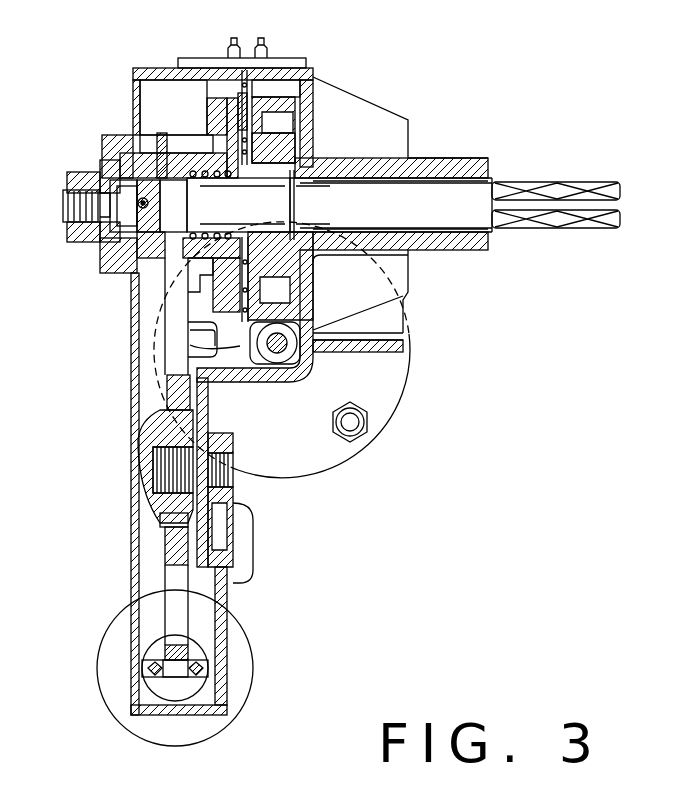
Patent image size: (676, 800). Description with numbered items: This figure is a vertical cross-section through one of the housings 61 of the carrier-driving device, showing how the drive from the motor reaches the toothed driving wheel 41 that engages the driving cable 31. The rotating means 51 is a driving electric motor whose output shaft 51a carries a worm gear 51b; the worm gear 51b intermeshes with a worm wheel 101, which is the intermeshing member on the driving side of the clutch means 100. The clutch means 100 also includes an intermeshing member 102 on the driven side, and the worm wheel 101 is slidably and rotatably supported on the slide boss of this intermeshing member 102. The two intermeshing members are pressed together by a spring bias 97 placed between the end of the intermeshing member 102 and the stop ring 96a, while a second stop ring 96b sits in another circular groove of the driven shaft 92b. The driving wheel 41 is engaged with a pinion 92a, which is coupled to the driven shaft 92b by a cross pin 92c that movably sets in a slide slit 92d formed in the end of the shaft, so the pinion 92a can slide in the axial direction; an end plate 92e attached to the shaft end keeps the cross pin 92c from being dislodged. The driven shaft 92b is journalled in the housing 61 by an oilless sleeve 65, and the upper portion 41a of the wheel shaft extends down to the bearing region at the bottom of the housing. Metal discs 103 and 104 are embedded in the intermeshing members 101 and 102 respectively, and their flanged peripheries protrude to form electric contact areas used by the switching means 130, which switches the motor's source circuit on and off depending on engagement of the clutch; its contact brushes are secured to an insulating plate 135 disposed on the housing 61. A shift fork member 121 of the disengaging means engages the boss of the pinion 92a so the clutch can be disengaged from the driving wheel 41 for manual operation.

The switching means 130 is at (230, 90).
The insulating plate 135 is at (289, 58).
The shift fork member 121 is at (133, 134).
The spring bias 97 is at (195, 132).
The pinion 92a is at (187, 142).
The clutch means 100 is at (305, 133).
The intermeshing member 102 is at (300, 162).
The driven shaft 92b is at (478, 195).
The end plate 92e is at (68, 230).
The cross pin 92c is at (234, 198).
The stop ring 96a is at (265, 228).
The stop ring 96b is at (294, 226).
The oilless sleeve 65 is at (338, 224).
The slide slit 92d is at (103, 247).
The worm wheel 101 is at (316, 327).
The shaft upper portion 41a is at (138, 292).
The metal disc 104 is at (217, 325).
The metal disc 103 is at (247, 345).
The worm gear 51b is at (285, 352).
The output shaft 51a is at (237, 383).
The rotating means 51 is at (378, 408).
The toothed driving wheel 41 is at (166, 552).
The driving cable 31 is at (210, 672).
The housing 61 is at (124, 711).